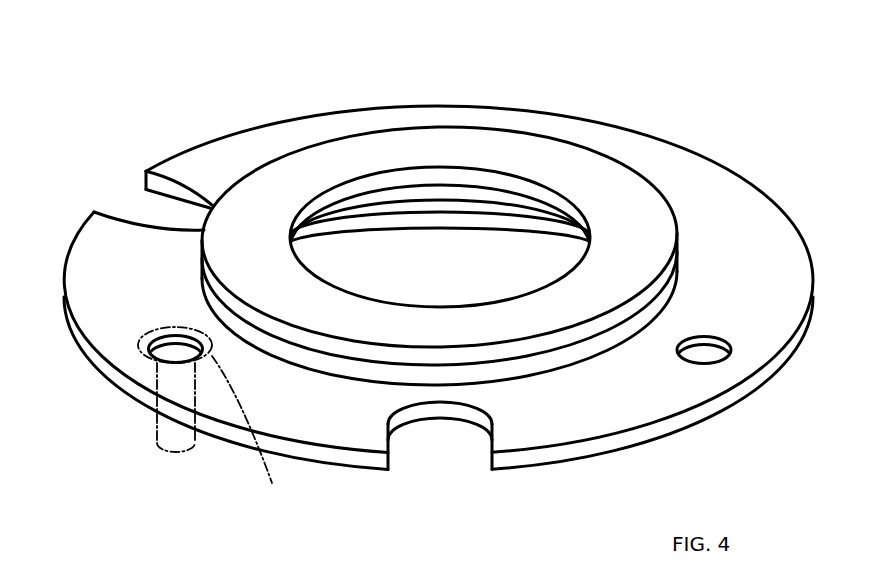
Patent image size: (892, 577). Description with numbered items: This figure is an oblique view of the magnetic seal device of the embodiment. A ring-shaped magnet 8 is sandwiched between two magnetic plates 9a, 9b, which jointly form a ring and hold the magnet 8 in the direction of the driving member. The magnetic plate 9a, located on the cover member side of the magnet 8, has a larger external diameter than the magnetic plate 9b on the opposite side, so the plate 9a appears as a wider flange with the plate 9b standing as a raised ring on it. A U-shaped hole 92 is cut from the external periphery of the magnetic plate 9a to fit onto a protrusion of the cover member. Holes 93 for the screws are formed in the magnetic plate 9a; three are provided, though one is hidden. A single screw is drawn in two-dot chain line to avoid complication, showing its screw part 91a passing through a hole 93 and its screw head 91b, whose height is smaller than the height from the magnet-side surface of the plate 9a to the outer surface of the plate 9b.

The magnet 8 is at (563, 358).
The magnetic plate 9a is at (225, 145).
The magnetic plate 9b is at (347, 135).
The hole 92 is at (160, 191).
The hole 93 is at (167, 358).
The screw part 91a is at (320, 500).
The screw head 91b is at (264, 433).